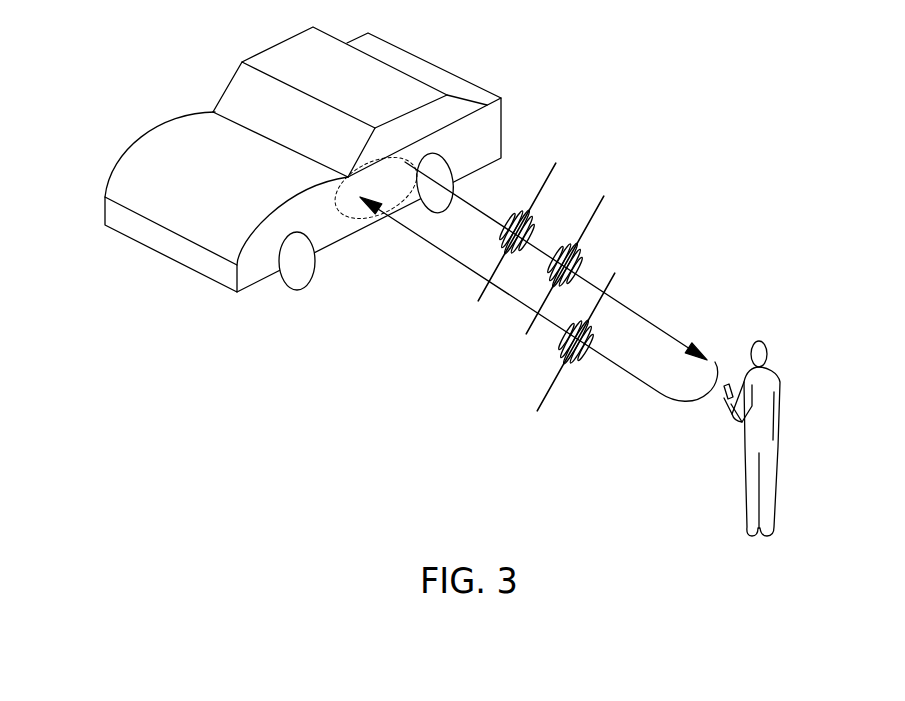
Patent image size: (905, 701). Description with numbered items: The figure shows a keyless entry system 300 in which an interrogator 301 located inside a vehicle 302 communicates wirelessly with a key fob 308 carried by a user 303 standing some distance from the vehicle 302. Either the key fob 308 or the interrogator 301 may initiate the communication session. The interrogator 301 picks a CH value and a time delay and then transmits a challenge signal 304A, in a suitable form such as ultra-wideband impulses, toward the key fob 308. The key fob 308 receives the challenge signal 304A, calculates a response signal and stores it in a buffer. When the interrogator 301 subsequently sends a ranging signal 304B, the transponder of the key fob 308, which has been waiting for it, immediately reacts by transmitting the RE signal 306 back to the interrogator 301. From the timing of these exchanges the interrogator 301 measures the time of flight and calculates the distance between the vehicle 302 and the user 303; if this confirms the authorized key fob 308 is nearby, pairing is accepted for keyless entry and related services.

The keyless entry system 300 is at (79, 63).
The interrogator 301 is at (336, 216).
The vehicle 302 is at (156, 146).
The user 303 is at (780, 402).
The challenge signal 304A is at (596, 216).
The ranging signal 304B is at (545, 190).
The RE signal 306 is at (541, 385).
The key fob 308 is at (726, 386).